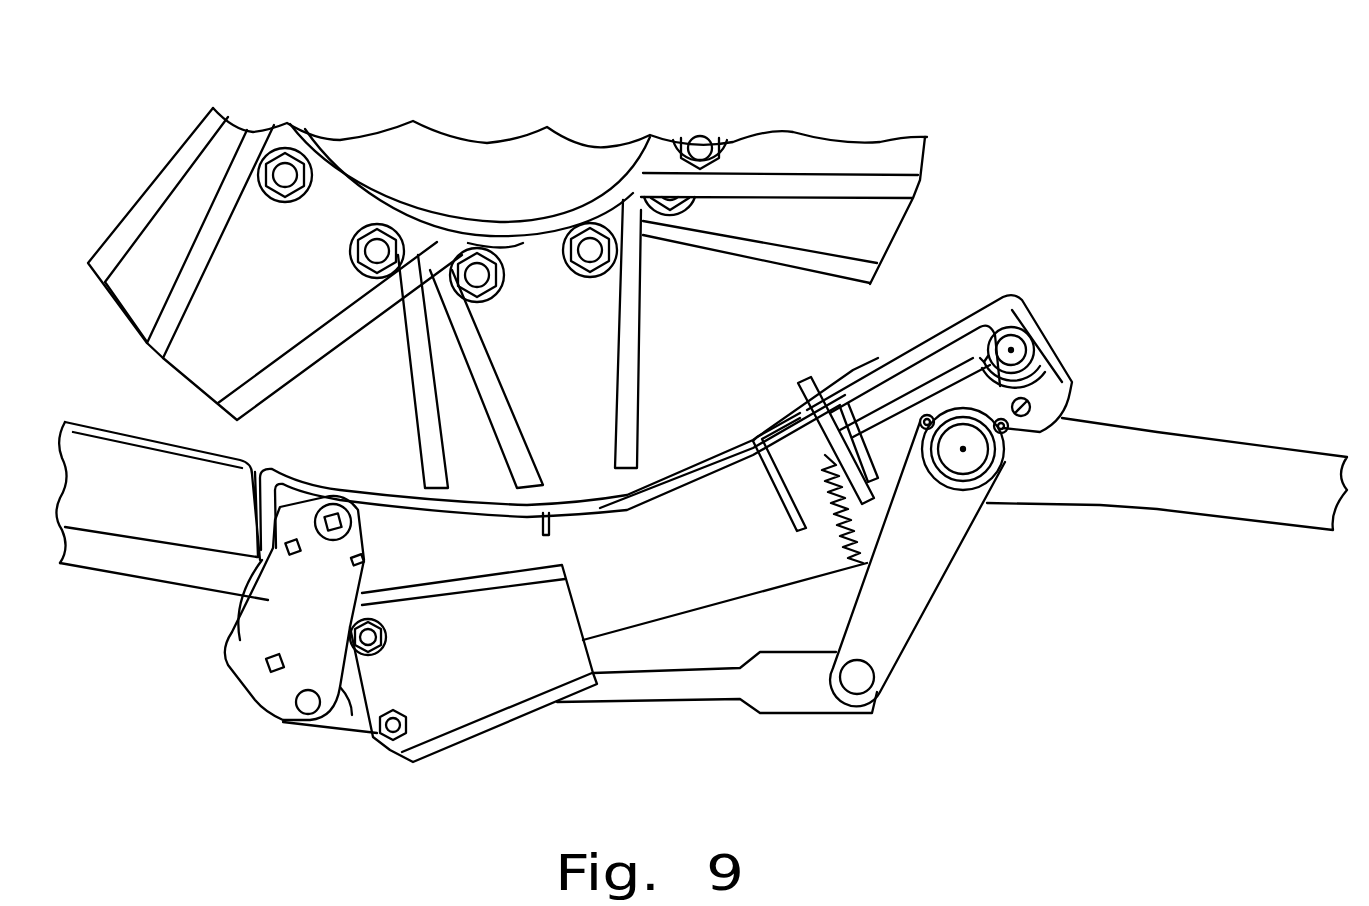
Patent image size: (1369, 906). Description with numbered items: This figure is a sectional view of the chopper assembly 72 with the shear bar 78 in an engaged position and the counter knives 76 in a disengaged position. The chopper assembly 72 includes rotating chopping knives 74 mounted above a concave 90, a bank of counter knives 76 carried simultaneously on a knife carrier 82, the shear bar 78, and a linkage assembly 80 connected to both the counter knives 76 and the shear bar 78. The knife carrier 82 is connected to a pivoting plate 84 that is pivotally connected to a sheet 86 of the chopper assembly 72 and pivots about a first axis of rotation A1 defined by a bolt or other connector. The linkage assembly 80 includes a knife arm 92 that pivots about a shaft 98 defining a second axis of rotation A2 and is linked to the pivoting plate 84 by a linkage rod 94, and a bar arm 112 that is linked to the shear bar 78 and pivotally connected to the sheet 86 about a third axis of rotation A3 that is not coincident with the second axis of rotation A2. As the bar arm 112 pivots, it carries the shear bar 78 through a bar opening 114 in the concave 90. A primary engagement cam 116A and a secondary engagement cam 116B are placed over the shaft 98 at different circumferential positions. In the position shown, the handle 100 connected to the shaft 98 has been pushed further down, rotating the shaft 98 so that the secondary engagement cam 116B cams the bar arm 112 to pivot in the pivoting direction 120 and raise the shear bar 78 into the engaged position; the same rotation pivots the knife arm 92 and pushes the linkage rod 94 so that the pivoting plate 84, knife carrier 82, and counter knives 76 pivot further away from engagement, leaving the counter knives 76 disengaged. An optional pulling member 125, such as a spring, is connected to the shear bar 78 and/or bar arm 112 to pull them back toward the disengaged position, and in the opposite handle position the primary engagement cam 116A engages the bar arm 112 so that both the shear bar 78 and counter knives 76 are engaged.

The chopper assembly 72 is at (876, 108).
The chopping knives 74 is at (412, 387).
The counter knives 76 is at (557, 613).
The shear bar 78 is at (830, 432).
The linkage assembly 80 is at (946, 660).
The knife carrier 82 is at (353, 690).
The pivoting plate 84 is at (240, 663).
The sheet 86 is at (446, 551).
The concave 90 is at (722, 450).
The knife arm 92 is at (933, 567).
The linkage rod 94 is at (680, 693).
The shaft 98 is at (957, 467).
The handle 100 is at (1263, 455).
The bar arm 112 is at (947, 380).
The bar opening 114 is at (800, 405).
The primary engagement cam 116A is at (1006, 430).
The secondary engagement cam 116B is at (925, 416).
The pivoting direction 120 is at (1037, 387).
The pulling member 125 is at (837, 520).
The first axis of rotation A1 is at (334, 517).
The second axis of rotation A2 is at (966, 452).
The third axis of rotation A3 is at (1013, 348).